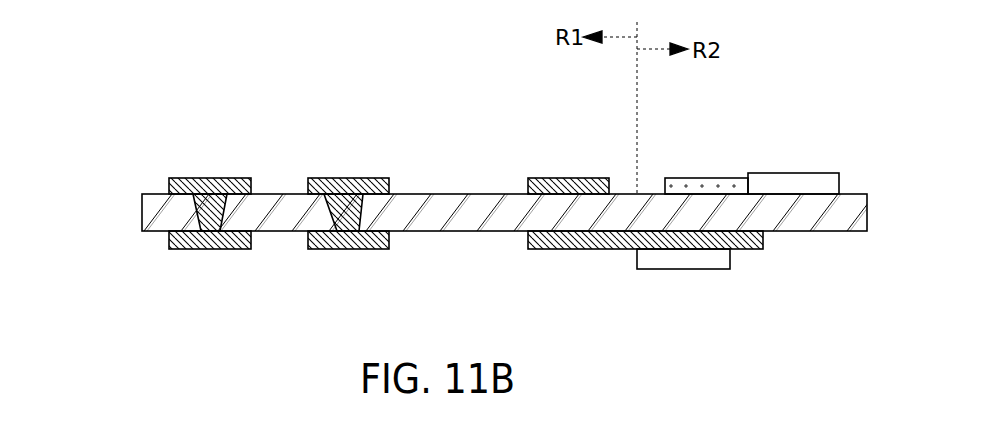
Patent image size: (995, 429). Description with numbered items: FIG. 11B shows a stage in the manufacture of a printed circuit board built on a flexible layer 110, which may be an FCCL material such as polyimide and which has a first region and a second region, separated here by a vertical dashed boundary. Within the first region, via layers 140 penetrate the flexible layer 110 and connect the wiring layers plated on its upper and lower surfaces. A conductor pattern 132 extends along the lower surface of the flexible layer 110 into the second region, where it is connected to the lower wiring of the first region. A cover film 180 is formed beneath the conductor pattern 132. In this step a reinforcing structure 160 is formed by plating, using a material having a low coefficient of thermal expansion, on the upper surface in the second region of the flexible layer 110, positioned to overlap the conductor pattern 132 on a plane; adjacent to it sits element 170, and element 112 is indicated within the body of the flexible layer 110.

The flexible layer 110 is at (153, 215).
The insulating body of substrate 112 is at (792, 203).
The conductor pattern 132 is at (763, 243).
The via layer 140 is at (336, 224).
The reinforcing structure 160 is at (732, 179).
The first electronic component 170 is at (817, 173).
The cover film 180 is at (730, 265).